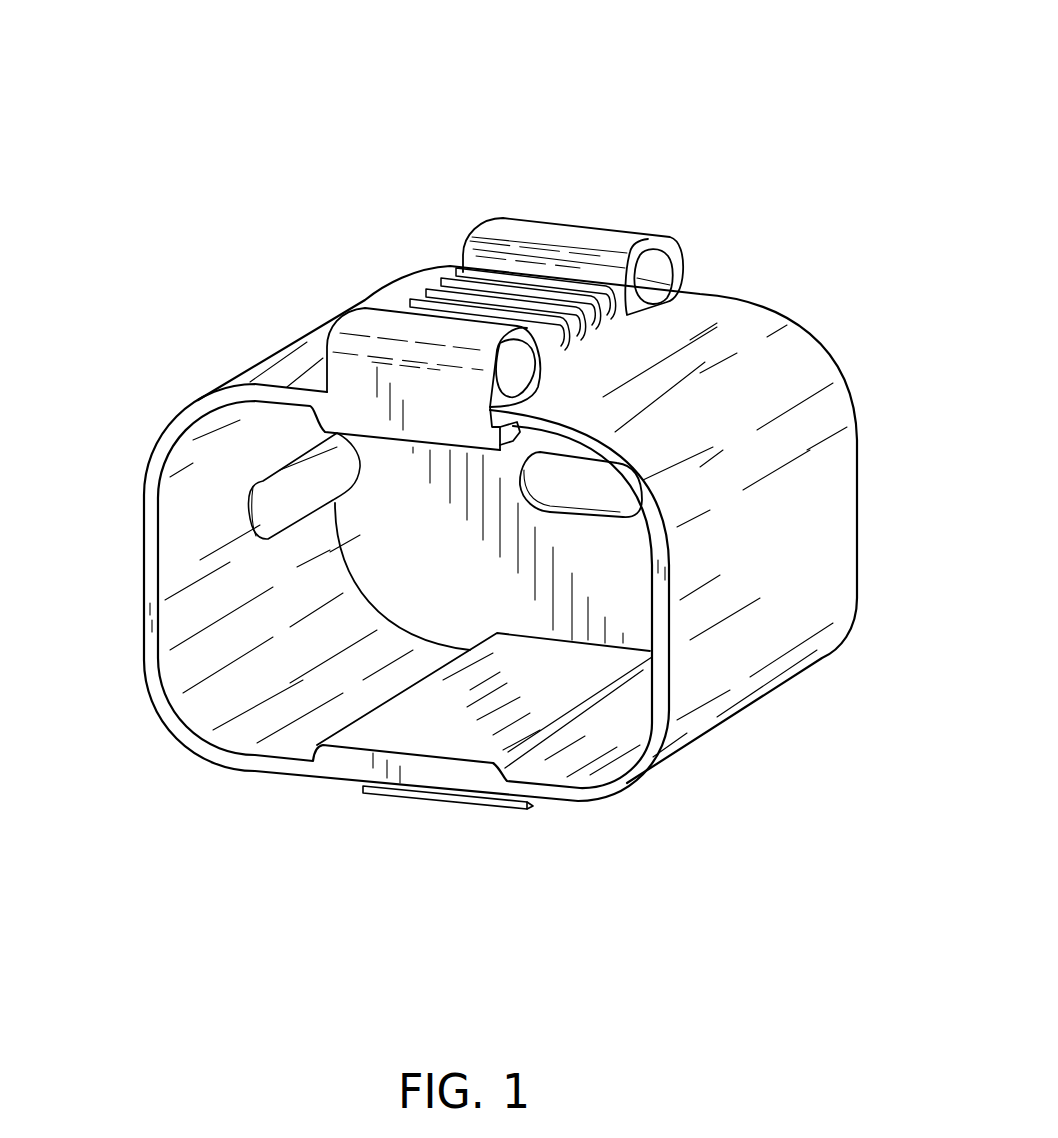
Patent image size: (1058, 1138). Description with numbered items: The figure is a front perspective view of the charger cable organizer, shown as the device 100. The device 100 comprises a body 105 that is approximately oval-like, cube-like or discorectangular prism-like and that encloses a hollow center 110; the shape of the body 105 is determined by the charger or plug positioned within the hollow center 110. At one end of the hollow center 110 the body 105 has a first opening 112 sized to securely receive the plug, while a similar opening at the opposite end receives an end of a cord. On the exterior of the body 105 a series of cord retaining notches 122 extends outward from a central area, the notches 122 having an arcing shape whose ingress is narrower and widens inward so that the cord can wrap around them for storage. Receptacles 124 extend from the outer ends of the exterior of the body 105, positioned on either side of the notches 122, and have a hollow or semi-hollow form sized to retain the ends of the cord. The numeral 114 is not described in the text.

The device 100 is at (388, 120).
The body 105 is at (293, 313).
The hollow center 110 is at (391, 538).
The first opening 112 is at (616, 480).
The floor plate 114 is at (600, 650).
The notches 122 is at (441, 295).
The receptacles 124 is at (644, 273).